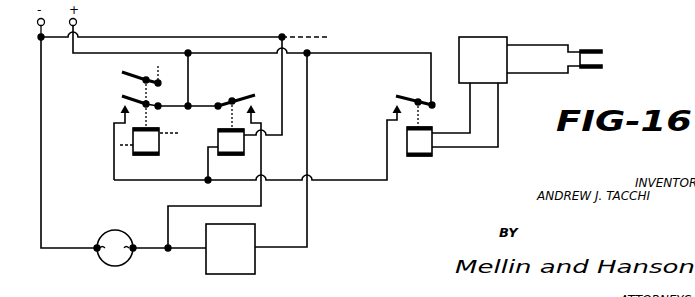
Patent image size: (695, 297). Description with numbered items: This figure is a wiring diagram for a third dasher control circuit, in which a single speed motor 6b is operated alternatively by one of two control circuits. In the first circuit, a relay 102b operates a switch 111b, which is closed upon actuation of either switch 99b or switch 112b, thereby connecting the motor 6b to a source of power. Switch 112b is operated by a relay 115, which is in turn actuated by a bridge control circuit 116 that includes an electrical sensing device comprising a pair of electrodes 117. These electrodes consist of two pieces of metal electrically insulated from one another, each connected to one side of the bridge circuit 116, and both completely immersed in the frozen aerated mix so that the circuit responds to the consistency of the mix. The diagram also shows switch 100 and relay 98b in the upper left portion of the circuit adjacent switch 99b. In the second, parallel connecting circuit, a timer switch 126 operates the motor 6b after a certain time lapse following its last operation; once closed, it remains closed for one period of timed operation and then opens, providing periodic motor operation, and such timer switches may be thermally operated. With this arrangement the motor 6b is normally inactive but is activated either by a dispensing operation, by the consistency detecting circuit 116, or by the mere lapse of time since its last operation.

The single speed motor 6b is at (121, 231).
The relay 98b is at (147, 158).
The switch 99b is at (118, 104).
The switch 100 is at (123, 75).
The relay 102b is at (219, 128).
The switch 111b is at (258, 90).
The switch 112b is at (405, 88).
The relay 115 is at (416, 157).
The bridge control circuit 116 is at (493, 69).
The electrodes 117 is at (605, 58).
The timer switch 126 is at (240, 254).